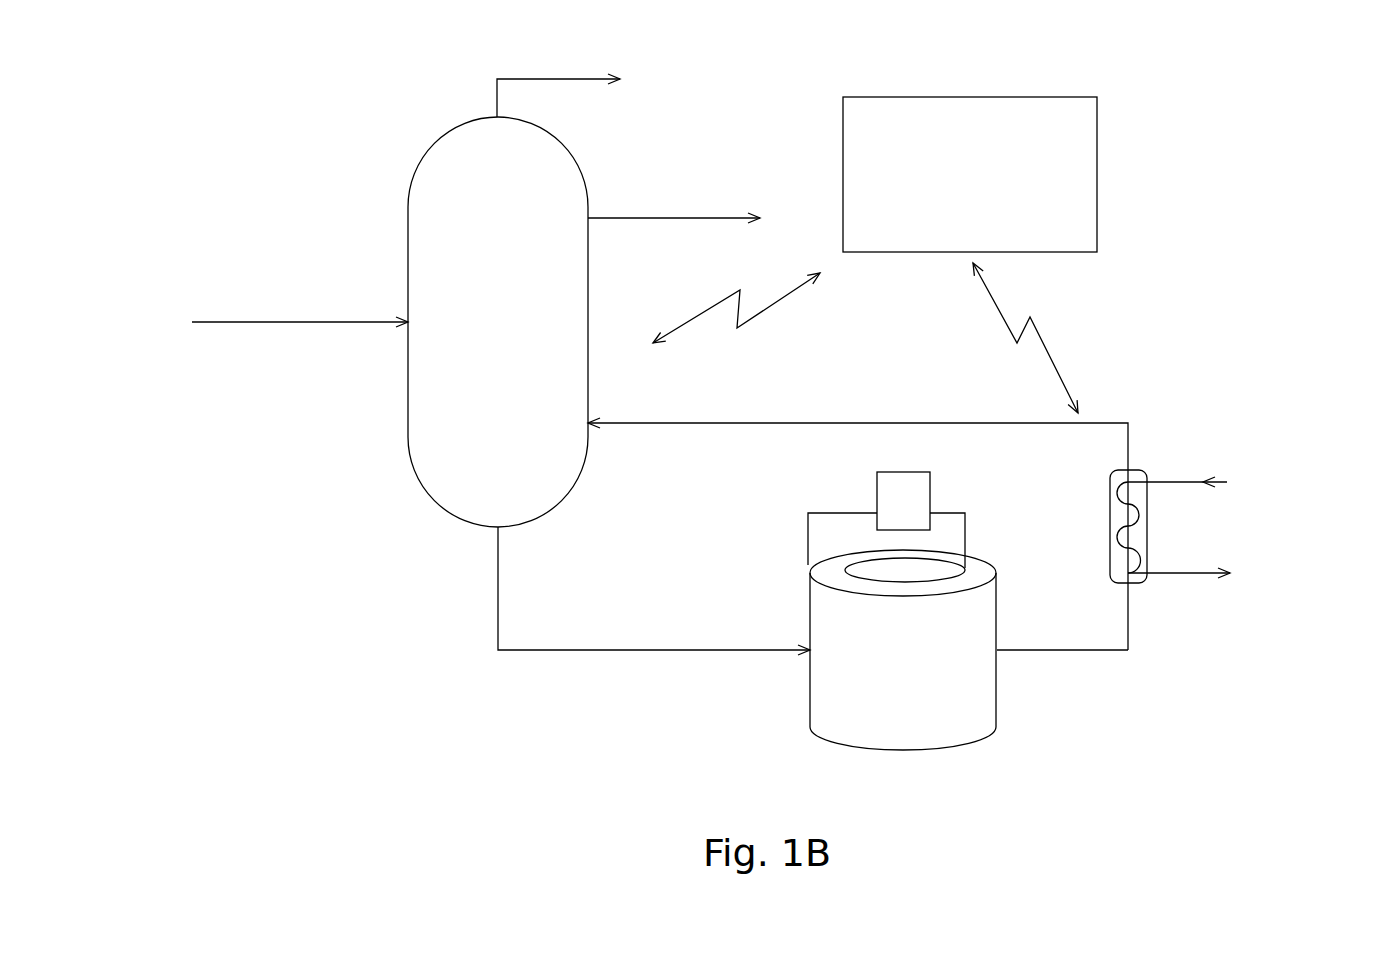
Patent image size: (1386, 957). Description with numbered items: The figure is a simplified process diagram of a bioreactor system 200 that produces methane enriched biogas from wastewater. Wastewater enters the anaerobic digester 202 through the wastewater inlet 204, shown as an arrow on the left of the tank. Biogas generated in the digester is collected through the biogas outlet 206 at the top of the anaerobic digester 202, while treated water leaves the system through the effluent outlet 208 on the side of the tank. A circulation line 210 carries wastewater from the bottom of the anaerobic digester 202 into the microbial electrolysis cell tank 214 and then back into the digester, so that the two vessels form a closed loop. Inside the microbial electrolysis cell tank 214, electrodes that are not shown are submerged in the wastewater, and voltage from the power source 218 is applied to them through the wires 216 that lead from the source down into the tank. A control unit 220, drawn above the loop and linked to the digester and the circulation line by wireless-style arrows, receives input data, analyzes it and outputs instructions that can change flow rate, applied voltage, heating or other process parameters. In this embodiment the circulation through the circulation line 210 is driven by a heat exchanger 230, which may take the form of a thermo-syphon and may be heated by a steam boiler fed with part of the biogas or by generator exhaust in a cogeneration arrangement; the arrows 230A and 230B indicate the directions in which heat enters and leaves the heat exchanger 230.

The bioreactor system 200 is at (388, 647).
The anaerobic digester 202 is at (408, 437).
The wastewater inlet 204 is at (294, 325).
The biogas outlet 206 is at (497, 99).
The effluent outlet 208 is at (665, 220).
The circulation line 210 is at (841, 422).
The microbial electrolysis cell tank 214 is at (810, 704).
The wires 216 is at (808, 541).
The power source 218 is at (877, 495).
The control unit 220 is at (843, 139).
The heat exchanger 230 is at (1110, 527).
The heat entrance arrow 230A is at (1220, 482).
The heat release arrow 230B is at (1202, 577).